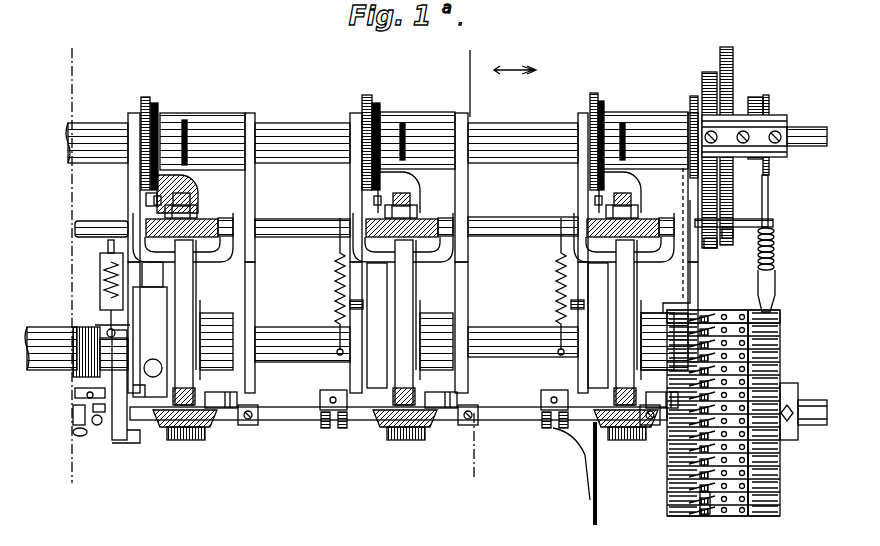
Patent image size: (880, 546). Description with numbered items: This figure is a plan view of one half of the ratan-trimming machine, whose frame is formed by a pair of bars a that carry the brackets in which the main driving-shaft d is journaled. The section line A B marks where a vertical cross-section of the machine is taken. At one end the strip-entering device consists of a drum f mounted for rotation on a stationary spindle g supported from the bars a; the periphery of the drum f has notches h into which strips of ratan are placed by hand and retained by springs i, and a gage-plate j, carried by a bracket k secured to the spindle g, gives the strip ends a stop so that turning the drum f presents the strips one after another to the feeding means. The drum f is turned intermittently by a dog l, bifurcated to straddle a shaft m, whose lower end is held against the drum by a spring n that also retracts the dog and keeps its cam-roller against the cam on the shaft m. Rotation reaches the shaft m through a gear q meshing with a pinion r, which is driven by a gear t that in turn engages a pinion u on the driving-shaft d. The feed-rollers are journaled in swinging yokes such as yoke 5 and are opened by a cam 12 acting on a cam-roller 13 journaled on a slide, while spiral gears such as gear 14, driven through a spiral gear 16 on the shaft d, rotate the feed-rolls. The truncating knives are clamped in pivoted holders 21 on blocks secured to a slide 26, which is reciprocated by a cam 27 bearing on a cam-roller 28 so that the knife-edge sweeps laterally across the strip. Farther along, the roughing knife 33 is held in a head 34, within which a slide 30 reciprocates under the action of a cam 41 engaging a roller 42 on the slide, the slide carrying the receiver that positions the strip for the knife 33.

The bars a is at (280, 123).
The cam 41 is at (147, 97).
The cam 27 is at (366, 96).
The roller 42 is at (144, 194).
The spiral gear 16 is at (200, 197).
The spiral gear 14 is at (240, 216).
The cam-roller 28 is at (378, 198).
The swinging yoke 5 is at (185, 315).
The head 34 is at (150, 329).
The slide 30 is at (117, 442).
The cutter or knife 33 is at (71, 424).
The slide 26 is at (340, 382).
The holder 21 is at (340, 428).
The section line A B A is at (463, 73).
The section line A B is at (478, 456).
The bracket k is at (572, 452).
The gage-plate j is at (592, 502).
The cam 12 is at (693, 98).
The gear t is at (710, 73).
The gear q is at (734, 64).
The pinion r is at (752, 98).
The shaft m is at (800, 128).
The dog l is at (769, 192).
The main driving-shaft d is at (775, 217).
The pinion u is at (712, 247).
The spring n is at (776, 251).
The cam-roller 13 is at (690, 256).
The notches or indentations h is at (772, 388).
The drum f is at (770, 380).
The springs i is at (707, 492).
The spindle g is at (828, 414).